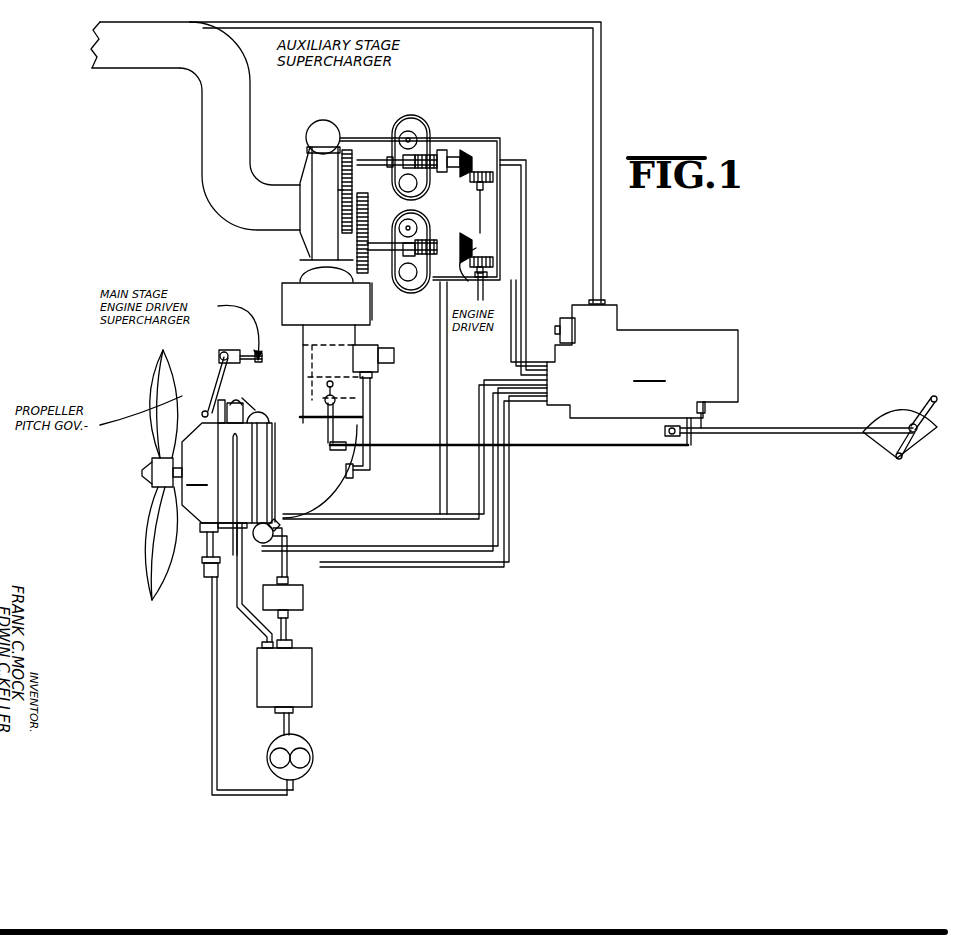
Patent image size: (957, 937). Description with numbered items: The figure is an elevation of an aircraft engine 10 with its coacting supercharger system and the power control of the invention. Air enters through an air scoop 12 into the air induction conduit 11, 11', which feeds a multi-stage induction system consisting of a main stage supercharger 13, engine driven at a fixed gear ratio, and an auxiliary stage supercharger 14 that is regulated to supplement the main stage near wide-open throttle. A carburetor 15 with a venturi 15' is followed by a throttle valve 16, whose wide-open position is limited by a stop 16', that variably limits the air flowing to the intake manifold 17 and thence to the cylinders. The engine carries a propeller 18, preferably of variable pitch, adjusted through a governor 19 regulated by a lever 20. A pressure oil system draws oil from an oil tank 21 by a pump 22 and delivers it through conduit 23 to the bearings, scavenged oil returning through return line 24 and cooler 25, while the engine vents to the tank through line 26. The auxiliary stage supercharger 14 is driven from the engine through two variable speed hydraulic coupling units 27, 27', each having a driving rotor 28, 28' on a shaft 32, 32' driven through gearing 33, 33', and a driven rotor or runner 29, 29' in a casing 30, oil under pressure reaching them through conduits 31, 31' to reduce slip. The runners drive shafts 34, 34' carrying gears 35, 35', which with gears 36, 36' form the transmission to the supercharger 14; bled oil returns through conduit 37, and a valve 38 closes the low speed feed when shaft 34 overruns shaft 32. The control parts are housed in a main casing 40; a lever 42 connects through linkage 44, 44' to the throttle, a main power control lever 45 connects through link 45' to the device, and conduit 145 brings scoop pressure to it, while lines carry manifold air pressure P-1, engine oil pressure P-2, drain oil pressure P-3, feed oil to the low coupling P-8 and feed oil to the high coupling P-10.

The aircraft engine 10 is at (269, 476).
The air induction conduit 11 is at (240, 129).
The air induction conduit 11' is at (322, 379).
The air scoop 12 is at (135, 62).
The main stage supercharger 13 is at (258, 412).
The auxiliary stage supercharger 14 is at (318, 125).
The carburetor 15 is at (381, 411).
The venturi 15' is at (317, 368).
The throttle valve 16 is at (317, 404).
The stop 16' is at (392, 406).
The intake manifold 17 is at (275, 536).
The propeller 18 is at (160, 556).
The governor 19 is at (202, 415).
The lever 20 is at (216, 359).
The oil tank 21 is at (310, 674).
The pump 22 is at (312, 756).
The conduit 23 is at (212, 687).
The return line 24 is at (290, 579).
The cooler 25 is at (300, 603).
The vent line 26 is at (251, 628).
The hydraulic coupling unit 27 is at (419, 134).
The hydraulic coupling unit 27' is at (404, 276).
The driving rotor 28 is at (412, 129).
The driving rotor 28' is at (412, 227).
The driven rotor 29 is at (393, 113).
The driven rotor 29' is at (387, 218).
The casing 30 is at (491, 138).
The conduit 31 is at (530, 265).
The conduit 31' is at (505, 323).
The shaft 32 is at (457, 205).
The shaft 32' is at (507, 274).
The gearing 33 is at (503, 160).
The gearing 33' is at (506, 246).
The shaft 34 is at (354, 168).
The shaft 34' is at (388, 301).
The gear 35 is at (321, 203).
The gear 35' is at (312, 266).
The gear 36 is at (369, 221).
The gear 36' is at (302, 194).
The conduit 37 is at (447, 343).
The valve 38 is at (444, 150).
The main casing 40 is at (642, 361).
The lever 42 is at (708, 430).
The linkage 44 is at (509, 456).
The linkage 44' is at (325, 428).
The main power control lever 45 is at (900, 420).
The link 45' is at (796, 416).
The conduit 145 is at (601, 133).
The engine manifold air pressure P-1 is at (412, 547).
The engine oil pressure P-2 is at (472, 569).
The drain oil pressure P-3 is at (398, 514).
The feed oil to low coupling P-8 is at (539, 406).
The feed oil to high coupling P-10 is at (549, 390).